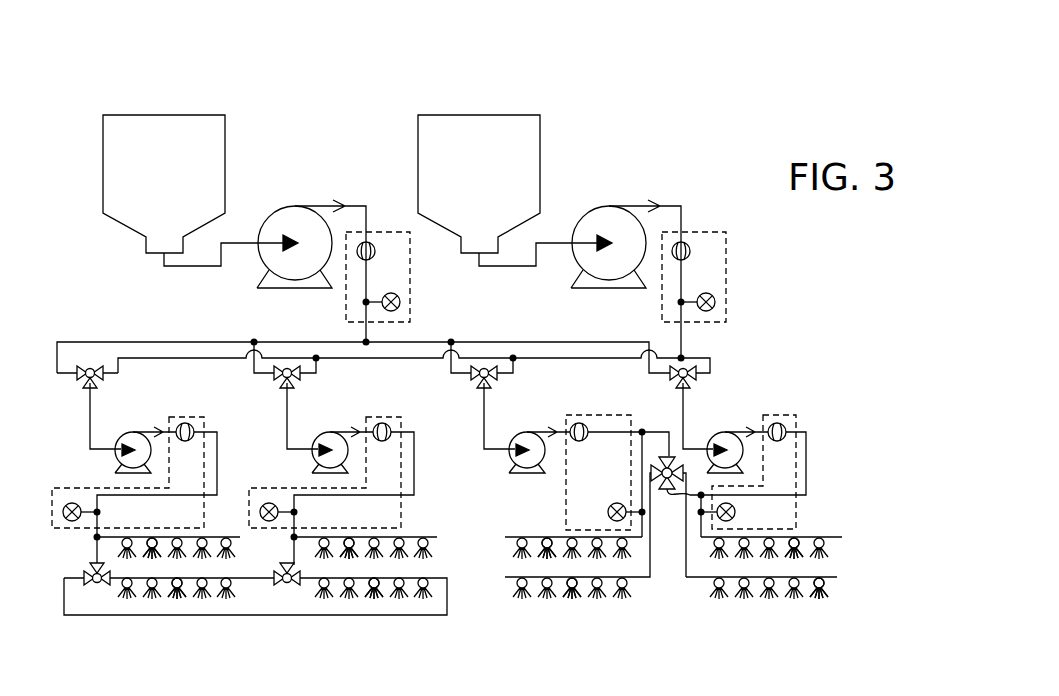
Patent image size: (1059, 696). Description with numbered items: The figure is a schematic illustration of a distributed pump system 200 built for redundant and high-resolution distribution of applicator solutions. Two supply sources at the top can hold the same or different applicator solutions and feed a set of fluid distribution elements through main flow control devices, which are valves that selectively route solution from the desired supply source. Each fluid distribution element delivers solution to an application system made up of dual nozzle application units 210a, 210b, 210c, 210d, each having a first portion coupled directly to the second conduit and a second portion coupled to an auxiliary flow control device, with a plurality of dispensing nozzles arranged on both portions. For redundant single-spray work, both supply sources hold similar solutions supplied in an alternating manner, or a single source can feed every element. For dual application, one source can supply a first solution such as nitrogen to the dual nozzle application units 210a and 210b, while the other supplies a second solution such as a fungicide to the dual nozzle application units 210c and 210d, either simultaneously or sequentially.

The distributed pump system 200 is at (764, 45).
The dual nozzle application unit 210a is at (102, 599).
The dual nozzle application unit 210b is at (298, 599).
The dual nozzle application unit 210c is at (655, 599).
The dual nozzle application unit 210d is at (691, 599).